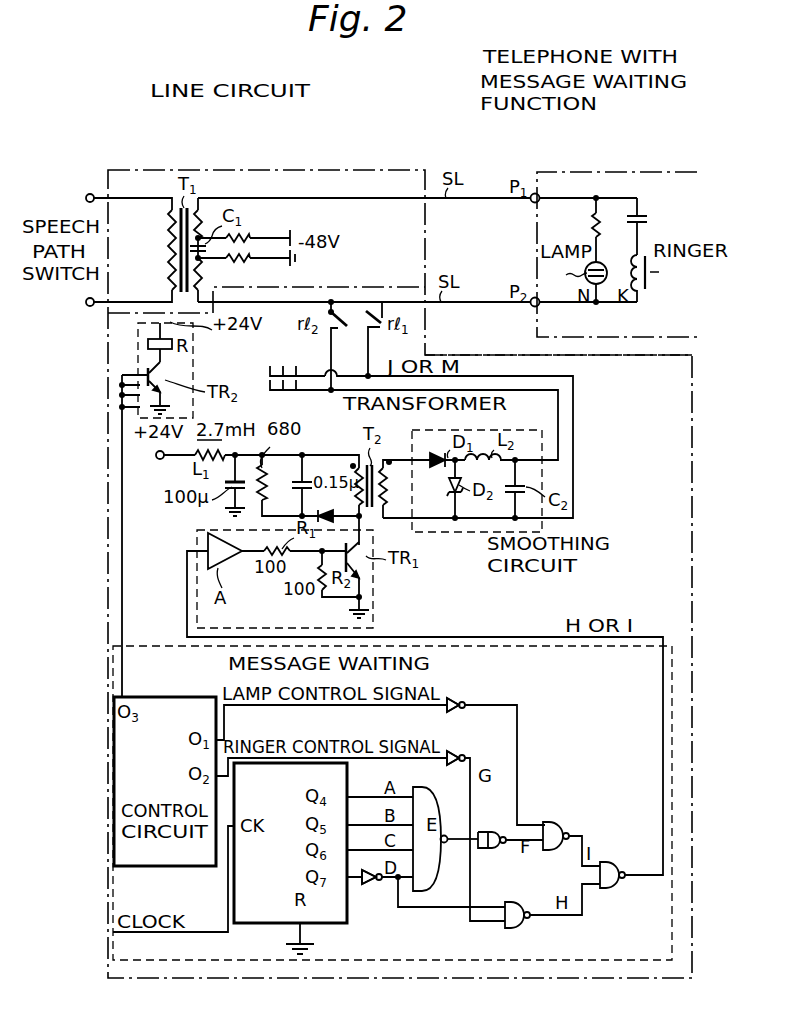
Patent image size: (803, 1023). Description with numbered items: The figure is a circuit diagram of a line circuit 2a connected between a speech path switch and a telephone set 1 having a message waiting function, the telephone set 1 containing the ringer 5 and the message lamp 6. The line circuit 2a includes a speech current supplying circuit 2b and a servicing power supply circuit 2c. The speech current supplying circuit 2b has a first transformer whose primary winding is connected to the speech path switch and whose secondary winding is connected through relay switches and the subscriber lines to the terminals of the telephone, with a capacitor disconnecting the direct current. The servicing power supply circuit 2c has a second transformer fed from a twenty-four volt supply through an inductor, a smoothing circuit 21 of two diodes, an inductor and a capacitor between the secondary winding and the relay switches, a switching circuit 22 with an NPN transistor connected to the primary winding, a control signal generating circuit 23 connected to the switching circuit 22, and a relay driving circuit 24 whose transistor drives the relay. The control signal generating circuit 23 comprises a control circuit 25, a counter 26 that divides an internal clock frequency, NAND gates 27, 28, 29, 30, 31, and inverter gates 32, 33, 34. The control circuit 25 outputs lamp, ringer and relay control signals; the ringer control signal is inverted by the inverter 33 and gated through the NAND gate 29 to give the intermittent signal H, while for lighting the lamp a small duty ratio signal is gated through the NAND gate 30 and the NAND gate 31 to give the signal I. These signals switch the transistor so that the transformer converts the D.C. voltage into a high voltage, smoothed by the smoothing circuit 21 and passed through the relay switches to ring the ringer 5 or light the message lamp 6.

The telephone set 1 is at (541, 169).
The line circuit 2a is at (348, 100).
The speech current supplying circuit 2b is at (360, 170).
The servicing power supply circuit 2c is at (444, 355).
The ringer 5 is at (650, 250).
The message lamp 6 is at (580, 250).
The smoothing circuit 21 is at (447, 535).
The switching circuit 22 is at (378, 613).
The control signal generating circuit 23 is at (467, 648).
The relay driving circuit 24 is at (193, 362).
The control circuit 25 is at (137, 697).
The counter 26 is at (343, 766).
The NAND gate 27 is at (415, 792).
The NAND gate 28 is at (485, 828).
The NAND gate 29 is at (519, 902).
The NAND gate 30 is at (555, 820).
The NAND gate 31 is at (620, 868).
The inverter gate 32 is at (369, 884).
The inverter 33 is at (455, 755).
The inverter gate 34 is at (460, 703).